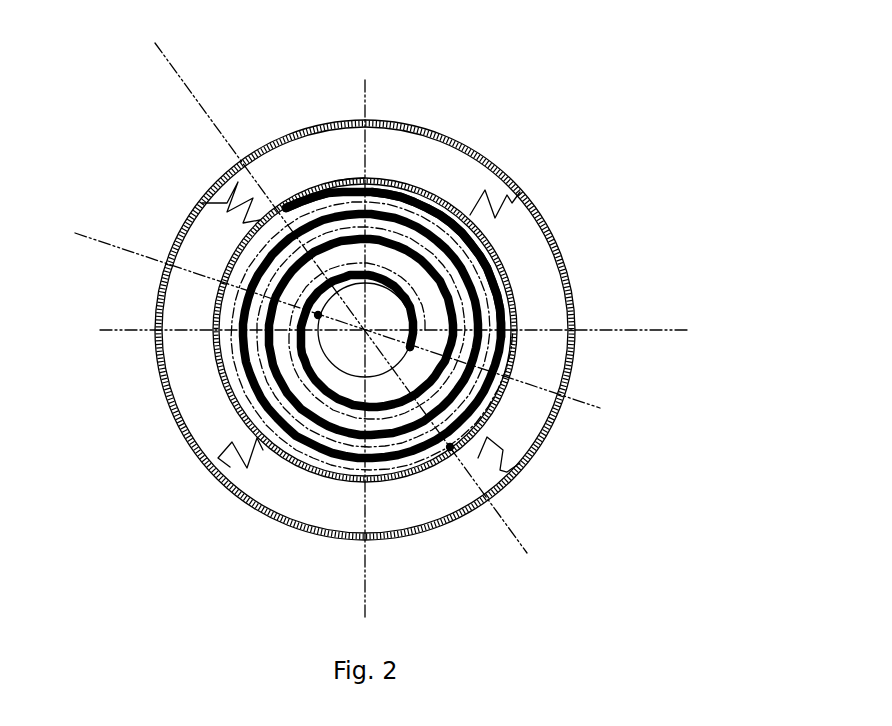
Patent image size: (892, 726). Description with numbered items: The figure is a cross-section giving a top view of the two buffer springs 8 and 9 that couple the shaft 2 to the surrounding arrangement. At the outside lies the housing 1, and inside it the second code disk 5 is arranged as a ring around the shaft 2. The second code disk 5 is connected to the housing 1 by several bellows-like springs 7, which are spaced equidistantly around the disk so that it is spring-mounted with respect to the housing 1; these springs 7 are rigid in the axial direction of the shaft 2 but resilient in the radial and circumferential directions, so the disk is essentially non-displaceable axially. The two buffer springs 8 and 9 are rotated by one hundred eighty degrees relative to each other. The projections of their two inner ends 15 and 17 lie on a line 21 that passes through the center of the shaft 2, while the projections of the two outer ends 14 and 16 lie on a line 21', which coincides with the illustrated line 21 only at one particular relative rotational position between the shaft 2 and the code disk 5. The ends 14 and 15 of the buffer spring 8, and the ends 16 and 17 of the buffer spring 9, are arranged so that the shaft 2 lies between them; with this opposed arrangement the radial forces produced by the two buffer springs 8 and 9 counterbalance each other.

The housing 1 is at (542, 222).
The shaft 2 is at (382, 318).
The second code disk 5 is at (510, 283).
The springs 7 is at (202, 203).
The buffer spring 8 is at (350, 178).
The buffer spring 9 is at (428, 203).
The outer end 14 is at (280, 208).
The inner end 15 is at (412, 348).
The outer end 16 is at (450, 449).
The inner end 17 is at (316, 316).
The line 21 is at (337, 285).
The line 21' is at (341, 297).